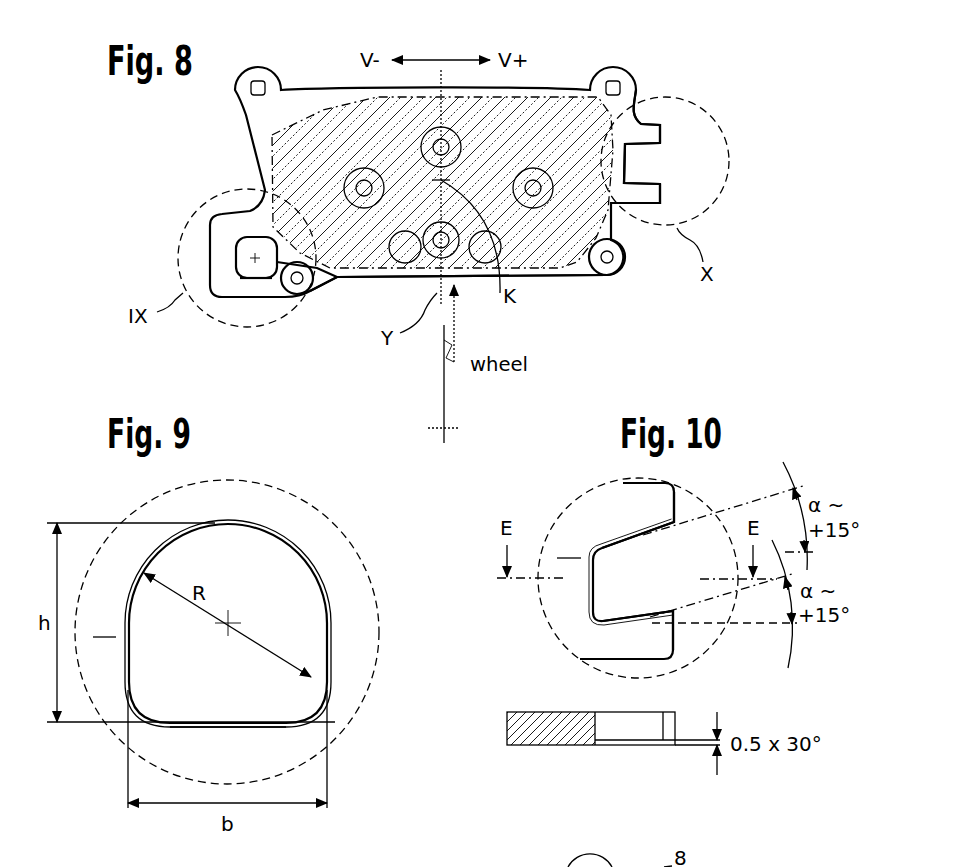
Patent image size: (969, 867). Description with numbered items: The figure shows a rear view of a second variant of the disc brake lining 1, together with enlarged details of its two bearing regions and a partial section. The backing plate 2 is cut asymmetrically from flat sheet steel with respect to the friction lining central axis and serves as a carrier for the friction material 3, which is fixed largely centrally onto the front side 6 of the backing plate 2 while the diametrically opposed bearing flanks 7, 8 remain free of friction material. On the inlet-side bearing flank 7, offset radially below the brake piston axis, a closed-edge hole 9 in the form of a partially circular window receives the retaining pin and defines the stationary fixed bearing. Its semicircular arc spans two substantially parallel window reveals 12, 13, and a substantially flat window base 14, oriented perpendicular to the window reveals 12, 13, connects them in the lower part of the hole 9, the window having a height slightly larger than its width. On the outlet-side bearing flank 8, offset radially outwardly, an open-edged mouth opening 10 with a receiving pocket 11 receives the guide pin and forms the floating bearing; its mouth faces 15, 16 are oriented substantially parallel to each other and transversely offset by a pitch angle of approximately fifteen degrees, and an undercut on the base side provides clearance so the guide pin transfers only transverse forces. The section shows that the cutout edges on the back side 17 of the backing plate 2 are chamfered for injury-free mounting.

In FIG. 8, the disc brake lining 1 is at (545, 80).
In FIG. 8, the backing plate 2 is at (568, 96).
In FIG. 10, the backing plate 2 is at (522, 730).
In FIG. 8, the friction material 3 is at (320, 108).
In FIG. 10, the friction material 3 is at (510, 866).
In FIG. 10, the front side 6 is at (545, 712).
In FIG. 8, the bearing flank 7 is at (247, 222).
In FIG. 9, the bearing flank 7 is at (325, 539).
In FIG. 8, the bearing flank 8 is at (633, 118).
In FIG. 10, the bearing flank 8 is at (617, 505).
In FIG. 8, the hole 9 is at (268, 292).
In FIG. 8, the mouth opening 10 is at (657, 160).
In FIG. 10, the mouth opening 10 is at (670, 573).
In FIG. 8, the receiving pocket 11 is at (632, 140).
In FIG. 10, the receiving pocket 11 is at (593, 592).
In FIG. 8, the window reveal 12 is at (236, 258).
In FIG. 9, the window reveal 12 is at (131, 645).
In FIG. 8, the window reveal 13 is at (300, 285).
In FIG. 9, the window reveal 13 is at (333, 659).
In FIG. 8, the window base 14 is at (255, 279).
In FIG. 9, the window base 14 is at (230, 727).
In FIG. 8, the mouth face 15 is at (645, 147).
In FIG. 10, the mouth face 15 is at (614, 533).
In FIG. 8, the mouth face 16 is at (661, 180).
In FIG. 10, the mouth face 16 is at (634, 602).
In FIG. 8, the back side 17 is at (580, 270).
In FIG. 9, the back side 17 is at (105, 625).
In FIG. 10, the back side 17 is at (553, 745).